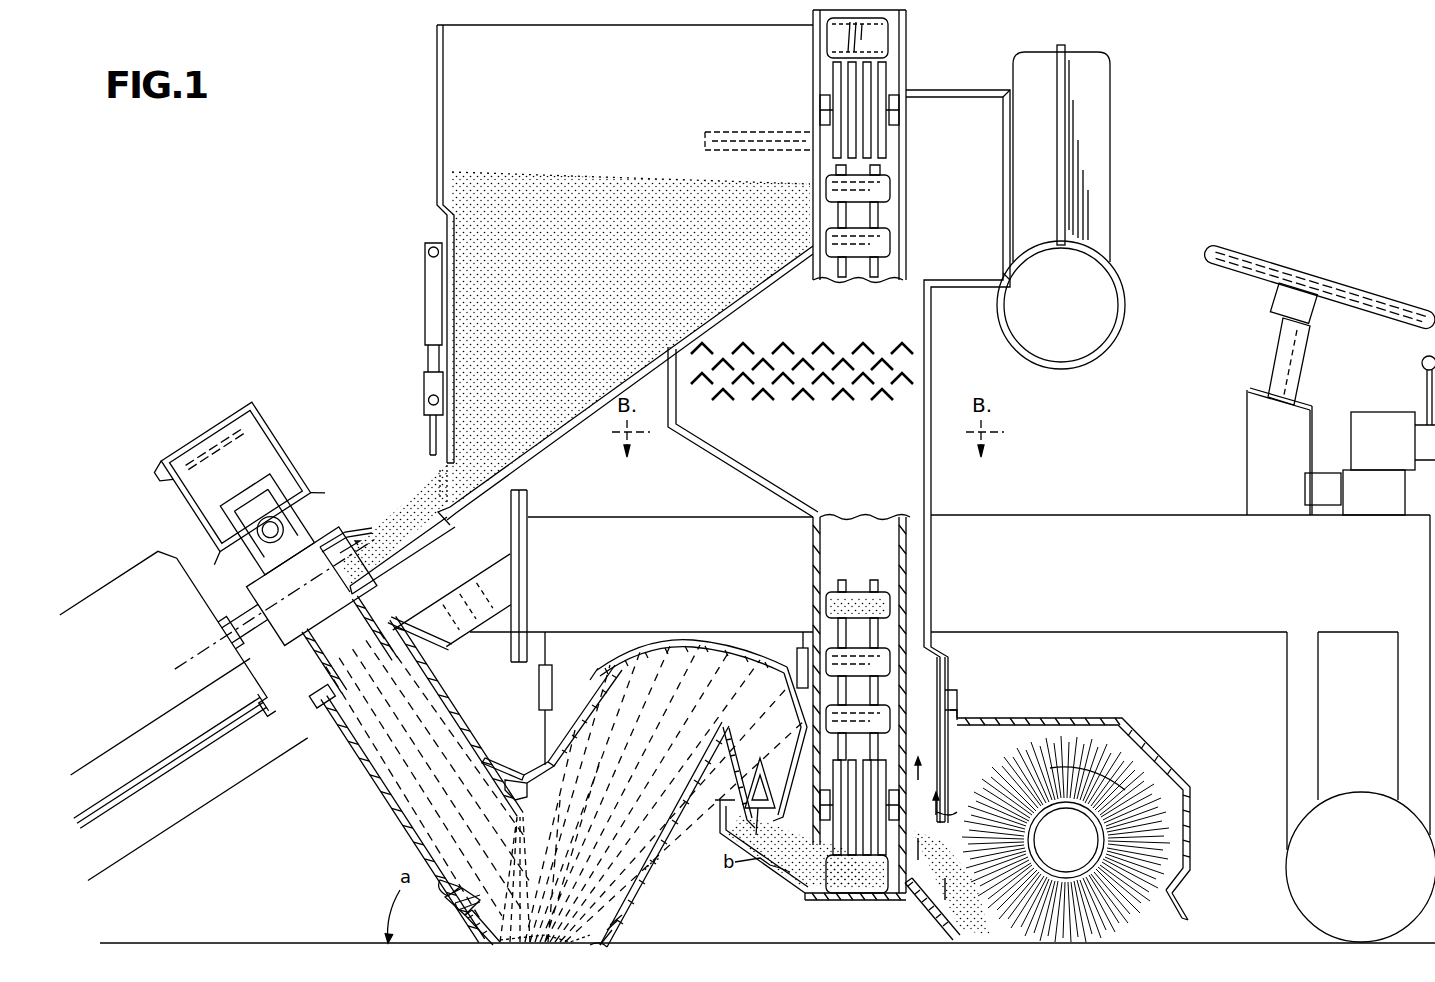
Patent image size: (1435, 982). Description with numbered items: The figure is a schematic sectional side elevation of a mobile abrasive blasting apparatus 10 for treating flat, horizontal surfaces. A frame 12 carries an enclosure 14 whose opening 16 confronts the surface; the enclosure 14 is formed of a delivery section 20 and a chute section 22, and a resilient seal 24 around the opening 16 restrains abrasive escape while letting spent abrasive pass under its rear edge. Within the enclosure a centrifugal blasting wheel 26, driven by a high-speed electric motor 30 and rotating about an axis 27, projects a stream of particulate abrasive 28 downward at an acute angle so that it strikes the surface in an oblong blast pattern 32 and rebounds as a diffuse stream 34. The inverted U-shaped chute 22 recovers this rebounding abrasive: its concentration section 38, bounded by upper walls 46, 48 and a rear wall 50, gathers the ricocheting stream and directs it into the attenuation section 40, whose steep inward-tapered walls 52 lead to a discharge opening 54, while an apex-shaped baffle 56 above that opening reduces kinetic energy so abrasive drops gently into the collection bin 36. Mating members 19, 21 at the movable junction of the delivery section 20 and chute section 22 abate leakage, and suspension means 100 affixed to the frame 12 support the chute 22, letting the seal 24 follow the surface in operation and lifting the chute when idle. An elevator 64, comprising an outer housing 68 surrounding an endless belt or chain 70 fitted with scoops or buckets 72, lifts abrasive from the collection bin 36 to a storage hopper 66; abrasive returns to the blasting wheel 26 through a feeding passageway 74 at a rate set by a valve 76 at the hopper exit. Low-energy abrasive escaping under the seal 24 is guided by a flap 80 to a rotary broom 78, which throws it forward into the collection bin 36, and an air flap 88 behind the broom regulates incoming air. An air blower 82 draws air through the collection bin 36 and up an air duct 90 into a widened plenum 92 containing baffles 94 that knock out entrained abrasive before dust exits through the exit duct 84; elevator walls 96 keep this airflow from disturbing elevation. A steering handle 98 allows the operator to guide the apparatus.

The abrasive blasting apparatus 10 is at (335, 341).
The frame 12 is at (575, 495).
The enclosure 14 is at (542, 836).
The opening 16 is at (612, 930).
The mating member 19 is at (512, 782).
The delivery section 20 is at (395, 778).
The mating member 21 is at (450, 896).
The chute section 22 is at (640, 868).
The resilient seal 24 is at (455, 905).
The centrifugal blasting wheel 26 is at (268, 478).
The axis 27 is at (382, 520).
The stream of particulate abrasive 28 is at (418, 684).
The high-speed electric motor 30 is at (87, 880).
The blast pattern 32 is at (535, 952).
The stream 34 is at (590, 700).
The collection bin 36 is at (800, 896).
The concentration section 38 is at (545, 760).
The attenuation section 40 is at (770, 672).
The upper wall 46 is at (608, 668).
The upper wall 48 is at (700, 643).
The rear wall 50 is at (664, 858).
The walls 52 is at (728, 790).
The discharge opening 54 is at (775, 870).
The baffle 56 is at (738, 820).
The elevator 64 is at (906, 66).
The storage hopper 66 is at (437, 120).
The outer housing 68 is at (924, 500).
The endless belt or chain 70 is at (880, 216).
The scoops or buckets 72 is at (888, 186).
The feeding passageway 74 is at (347, 528).
The valve 76 is at (425, 405).
The rotary broom 78 is at (1138, 768).
The flap 80 is at (945, 922).
The air blower 82 is at (1110, 190).
The exit duct 84 is at (1115, 338).
The air flap 88 is at (1188, 906).
The air duct 90 is at (918, 606).
The plenum 92 is at (912, 471).
The baffles 94 is at (868, 345).
The elevator walls 96 is at (946, 665).
The steering handle 98 is at (1343, 280).
The suspension means 100 is at (539, 690).